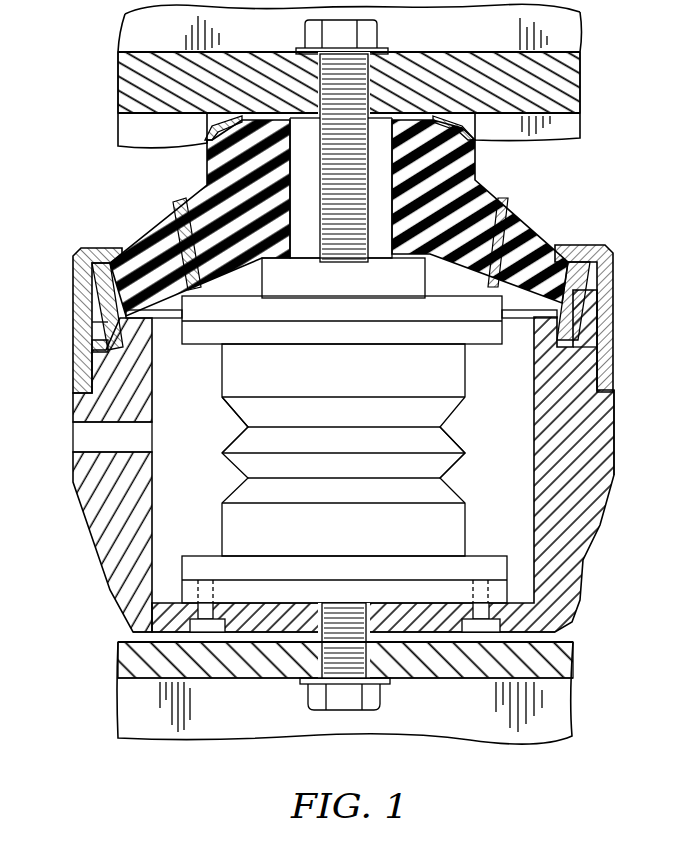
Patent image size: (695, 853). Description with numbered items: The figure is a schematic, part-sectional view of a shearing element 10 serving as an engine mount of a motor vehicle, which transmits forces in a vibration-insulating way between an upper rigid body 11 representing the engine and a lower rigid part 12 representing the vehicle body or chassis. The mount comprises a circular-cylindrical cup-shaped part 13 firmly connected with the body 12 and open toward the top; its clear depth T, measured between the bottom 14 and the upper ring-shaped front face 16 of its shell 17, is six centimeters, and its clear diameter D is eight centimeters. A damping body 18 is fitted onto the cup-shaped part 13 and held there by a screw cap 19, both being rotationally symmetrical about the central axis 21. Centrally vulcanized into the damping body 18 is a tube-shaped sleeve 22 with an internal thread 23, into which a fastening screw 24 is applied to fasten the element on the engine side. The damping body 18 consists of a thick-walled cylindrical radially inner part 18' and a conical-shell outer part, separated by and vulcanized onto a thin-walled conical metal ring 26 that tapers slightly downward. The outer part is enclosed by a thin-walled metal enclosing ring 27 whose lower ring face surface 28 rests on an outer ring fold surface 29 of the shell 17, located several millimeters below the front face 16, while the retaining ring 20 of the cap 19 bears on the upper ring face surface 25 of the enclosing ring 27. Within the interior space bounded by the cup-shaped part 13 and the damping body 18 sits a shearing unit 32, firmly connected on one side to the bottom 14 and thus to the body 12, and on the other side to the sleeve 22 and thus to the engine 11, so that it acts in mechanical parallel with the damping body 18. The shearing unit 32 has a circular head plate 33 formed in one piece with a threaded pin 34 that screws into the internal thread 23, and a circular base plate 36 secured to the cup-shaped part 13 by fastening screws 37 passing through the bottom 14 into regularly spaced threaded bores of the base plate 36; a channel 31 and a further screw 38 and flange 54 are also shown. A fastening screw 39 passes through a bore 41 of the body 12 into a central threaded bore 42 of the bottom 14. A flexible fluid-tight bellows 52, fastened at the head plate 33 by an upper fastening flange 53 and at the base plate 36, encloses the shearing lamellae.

The shearing element 10 is at (90, 596).
The upper rigid body 11 is at (566, 80).
The lower rigid part 12 is at (572, 668).
The cup-shaped part 13 is at (590, 582).
The bottom 14 is at (523, 618).
The upper ring-shaped front face 16 is at (543, 355).
The shell 17 is at (597, 498).
The damping body 18 is at (556, 192).
The radially inner damping body part 18' is at (339, 216).
The screw cap 19 is at (606, 306).
The retaining ring 20 is at (585, 247).
The central axis 21 is at (343, 363).
The tube-shaped sleeve 22 is at (366, 150).
The internal thread 23 is at (320, 188).
The fastening screw 24 is at (310, 34).
The upper ring face surface 25 is at (103, 260).
The conical metal ring 26 is at (172, 207).
The enclosing ring 27 is at (92, 293).
The lower ring face surface 28 is at (100, 346).
The outer ring fold surface 29 is at (88, 347).
The channel 31 is at (152, 411).
The shearing unit 32 is at (214, 388).
The head plate 33 is at (270, 315).
The threaded pin 34 is at (342, 237).
The base plate 36 is at (272, 593).
The fastening screws 37 is at (215, 627).
The fastening bolt 38 is at (470, 590).
The fastening screw 39 is at (378, 700).
The bore 41 is at (312, 663).
The central threaded bore 42 is at (333, 610).
The bellows 52 is at (440, 443).
The upper fastening flange 53 is at (190, 340).
The lower flange 54 is at (193, 563).
The clear depth T is at (516, 600).
The clear diameter D is at (530, 490).